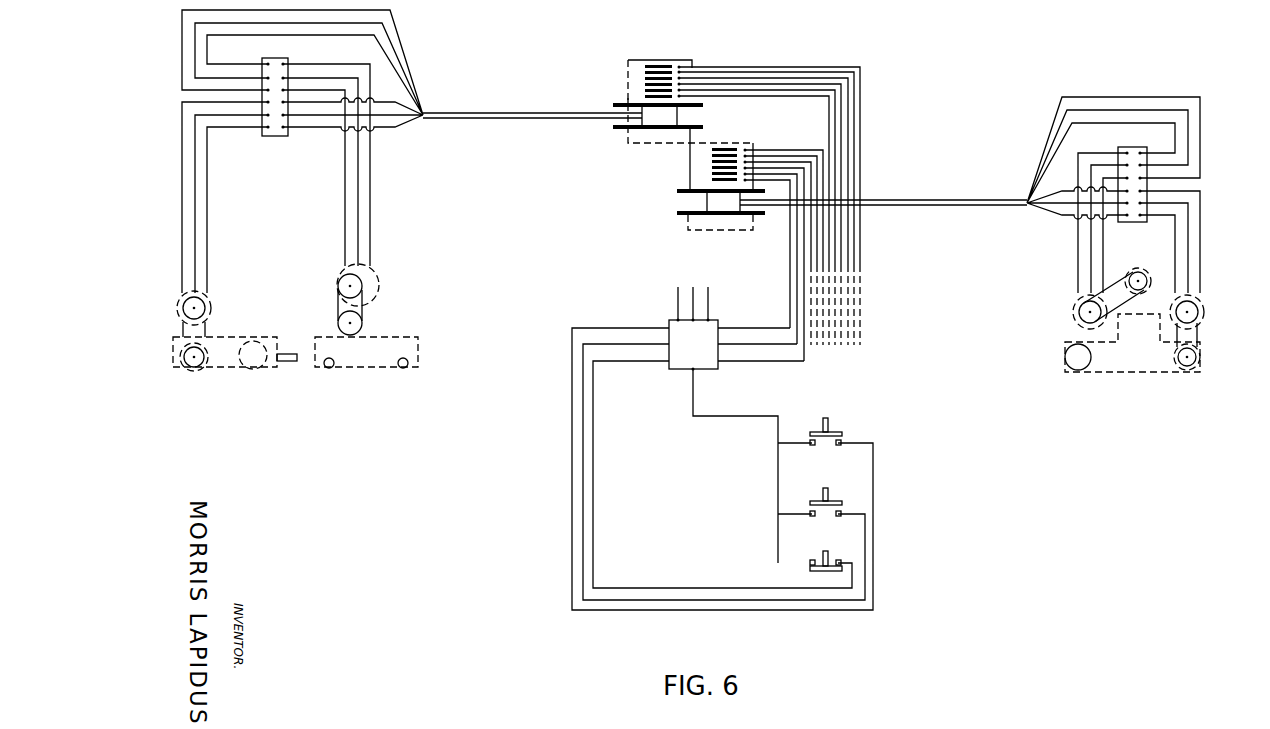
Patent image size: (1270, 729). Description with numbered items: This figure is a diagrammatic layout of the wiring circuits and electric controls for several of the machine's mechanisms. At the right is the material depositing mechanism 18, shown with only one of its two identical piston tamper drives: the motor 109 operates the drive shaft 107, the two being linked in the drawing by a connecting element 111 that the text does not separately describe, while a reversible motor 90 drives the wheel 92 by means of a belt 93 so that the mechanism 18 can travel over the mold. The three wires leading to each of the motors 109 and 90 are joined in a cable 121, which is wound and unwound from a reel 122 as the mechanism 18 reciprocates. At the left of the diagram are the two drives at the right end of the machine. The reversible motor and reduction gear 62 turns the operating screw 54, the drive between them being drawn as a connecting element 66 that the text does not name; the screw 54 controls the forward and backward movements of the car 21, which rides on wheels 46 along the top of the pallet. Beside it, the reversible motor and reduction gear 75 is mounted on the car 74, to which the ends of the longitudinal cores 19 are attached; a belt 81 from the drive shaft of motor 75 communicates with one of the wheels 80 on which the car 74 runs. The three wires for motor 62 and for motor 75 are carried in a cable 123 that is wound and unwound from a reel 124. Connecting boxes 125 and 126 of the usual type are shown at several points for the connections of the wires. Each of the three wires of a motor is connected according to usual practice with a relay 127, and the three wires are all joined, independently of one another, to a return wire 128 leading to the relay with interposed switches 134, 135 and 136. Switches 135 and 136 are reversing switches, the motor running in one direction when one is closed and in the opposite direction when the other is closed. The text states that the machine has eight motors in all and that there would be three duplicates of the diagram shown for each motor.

The connecting box 125 is at (285, 136).
The cable 123 is at (487, 112).
The reversible motor and reduction gear 75 is at (182, 310).
The belt 81 is at (183, 333).
The car 74 is at (177, 357).
The wheel 80 is at (200, 360).
The longitudinal core 19 is at (292, 362).
The reversible motor and reduction gear 62 is at (364, 282).
The belt 66 is at (338, 308).
The operating screw 54 is at (358, 323).
The car 21 is at (420, 348).
The wheel 46 is at (404, 367).
The connecting box 126 is at (666, 64).
The reel 124 is at (648, 130).
The reel 122 is at (705, 200).
The cable 121 is at (950, 198).
The relay 127 is at (683, 332).
The return wire 128 is at (757, 404).
The switch 134 is at (818, 563).
The reversing switch 135 is at (830, 500).
The reversing switch 136 is at (829, 431).
The motor 109 is at (1097, 308).
The drive shaft 107 is at (1149, 270).
The belt 111 is at (1113, 286).
The reversible motor 90 is at (1196, 300).
The belt 93 is at (1199, 335).
The wheel 92 is at (1193, 357).
The material depositing mechanism 18 is at (1065, 356).